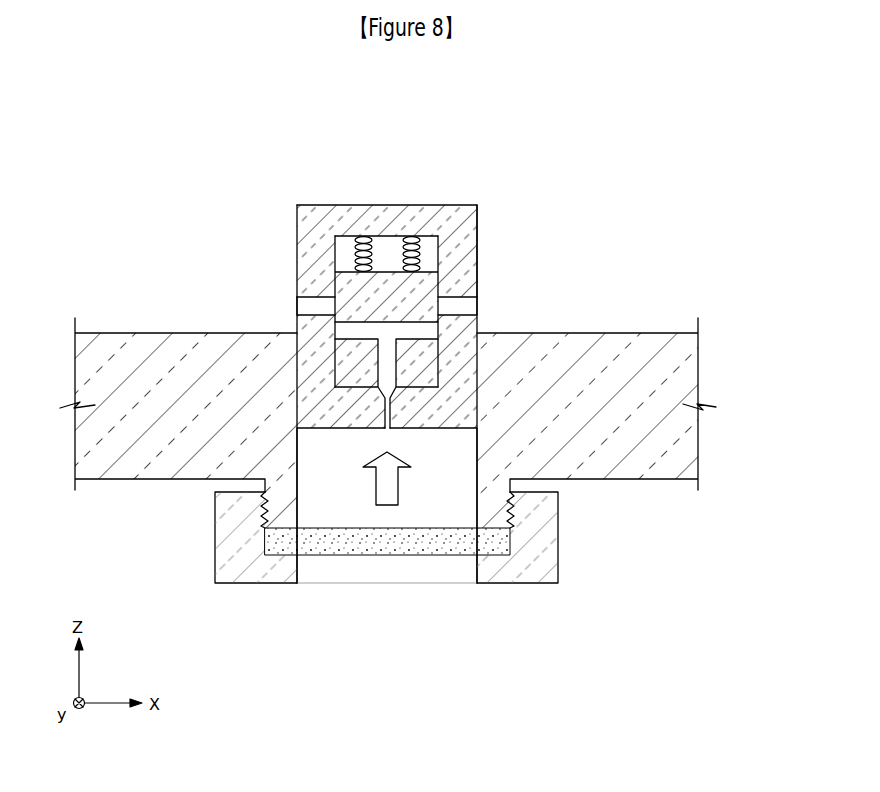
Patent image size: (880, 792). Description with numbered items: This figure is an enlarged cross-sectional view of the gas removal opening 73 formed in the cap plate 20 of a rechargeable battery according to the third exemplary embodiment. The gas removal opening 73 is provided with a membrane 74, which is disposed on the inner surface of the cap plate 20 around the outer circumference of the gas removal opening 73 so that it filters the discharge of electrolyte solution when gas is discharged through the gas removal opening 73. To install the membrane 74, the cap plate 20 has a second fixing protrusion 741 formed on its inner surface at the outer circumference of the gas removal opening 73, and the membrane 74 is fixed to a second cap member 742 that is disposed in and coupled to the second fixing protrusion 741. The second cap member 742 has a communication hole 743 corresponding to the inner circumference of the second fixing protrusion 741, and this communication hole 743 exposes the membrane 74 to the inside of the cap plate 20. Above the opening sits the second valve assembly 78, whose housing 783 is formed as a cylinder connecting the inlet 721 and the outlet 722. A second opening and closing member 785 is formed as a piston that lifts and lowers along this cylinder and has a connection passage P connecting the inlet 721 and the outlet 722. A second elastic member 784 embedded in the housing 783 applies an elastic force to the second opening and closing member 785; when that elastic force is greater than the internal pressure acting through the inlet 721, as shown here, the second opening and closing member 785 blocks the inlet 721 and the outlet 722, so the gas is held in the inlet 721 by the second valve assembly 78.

The second valve assembly 78 is at (285, 163).
The housing 783 is at (303, 238).
The second elastic member 784 is at (432, 243).
The second opening and closing member 785 is at (340, 285).
The outlet 722 is at (308, 303).
The inlet 721 is at (392, 412).
The connection passage P is at (388, 362).
The cap plate 20 is at (690, 352).
The gas removal opening 73 is at (342, 497).
The membrane 74 is at (321, 541).
The second fixing protrusion 741 is at (512, 505).
The second cap member 742 is at (545, 558).
The communication hole 743 is at (430, 572).